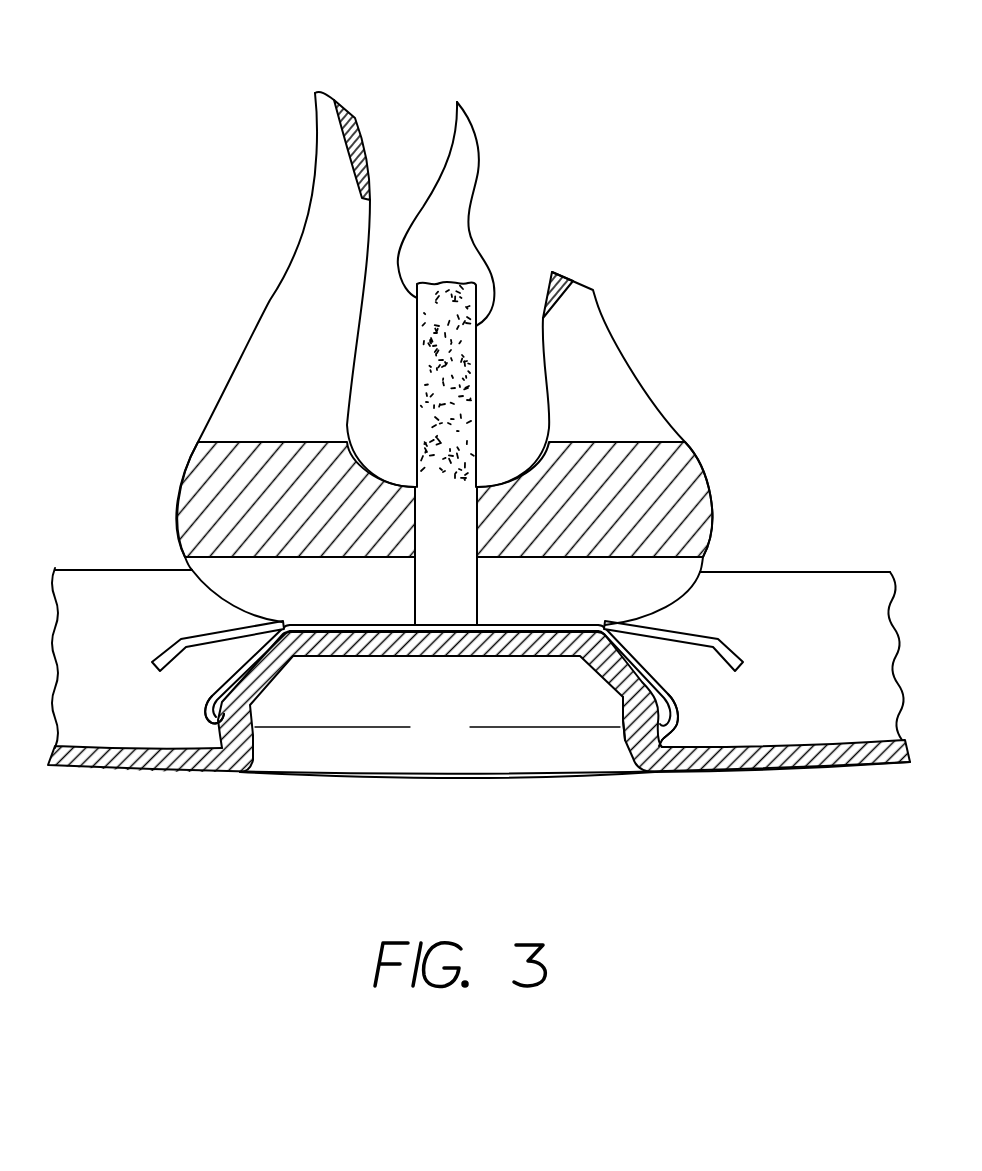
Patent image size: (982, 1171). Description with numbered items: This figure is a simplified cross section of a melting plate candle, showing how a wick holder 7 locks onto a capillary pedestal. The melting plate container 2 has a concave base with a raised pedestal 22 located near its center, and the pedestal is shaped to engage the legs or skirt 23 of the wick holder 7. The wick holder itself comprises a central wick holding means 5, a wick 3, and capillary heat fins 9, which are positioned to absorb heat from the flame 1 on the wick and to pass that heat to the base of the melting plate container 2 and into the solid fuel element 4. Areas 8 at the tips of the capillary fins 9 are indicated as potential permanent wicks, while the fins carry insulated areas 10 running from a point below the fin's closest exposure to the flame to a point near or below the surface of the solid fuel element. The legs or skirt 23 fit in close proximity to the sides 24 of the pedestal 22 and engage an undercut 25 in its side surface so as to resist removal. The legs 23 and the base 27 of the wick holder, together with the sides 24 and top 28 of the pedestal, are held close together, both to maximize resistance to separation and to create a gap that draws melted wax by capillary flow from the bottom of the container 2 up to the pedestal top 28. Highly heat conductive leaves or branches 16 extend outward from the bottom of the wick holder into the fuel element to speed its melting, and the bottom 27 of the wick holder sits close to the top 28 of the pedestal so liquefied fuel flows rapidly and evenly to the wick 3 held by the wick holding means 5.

The flame 1 is at (473, 140).
The melting plate container 2 is at (810, 769).
The wick 3 is at (460, 374).
The solid fuel element 4 is at (860, 707).
The wick holding means 5 is at (435, 567).
The wick holder 7 is at (662, 370).
The areas of the tips of the capillary fins 8 is at (352, 116).
The capillary heat fins 9 is at (277, 370).
The insulated areas 10 is at (278, 524).
The heat conductive leaves or branches 16 is at (175, 645).
The pedestal 22 is at (330, 773).
The legs or skirt 23 is at (677, 684).
The sides of the pedestal 24 is at (622, 656).
The undercut 25 is at (650, 720).
The base of the wick holder 27 is at (572, 616).
The top of the pedestal 28 is at (318, 657).